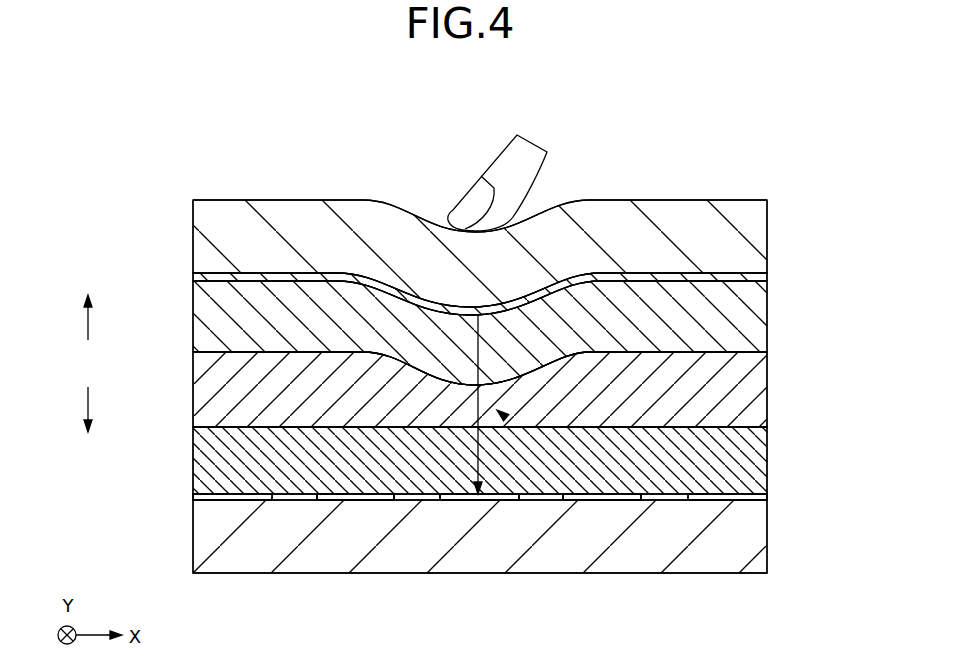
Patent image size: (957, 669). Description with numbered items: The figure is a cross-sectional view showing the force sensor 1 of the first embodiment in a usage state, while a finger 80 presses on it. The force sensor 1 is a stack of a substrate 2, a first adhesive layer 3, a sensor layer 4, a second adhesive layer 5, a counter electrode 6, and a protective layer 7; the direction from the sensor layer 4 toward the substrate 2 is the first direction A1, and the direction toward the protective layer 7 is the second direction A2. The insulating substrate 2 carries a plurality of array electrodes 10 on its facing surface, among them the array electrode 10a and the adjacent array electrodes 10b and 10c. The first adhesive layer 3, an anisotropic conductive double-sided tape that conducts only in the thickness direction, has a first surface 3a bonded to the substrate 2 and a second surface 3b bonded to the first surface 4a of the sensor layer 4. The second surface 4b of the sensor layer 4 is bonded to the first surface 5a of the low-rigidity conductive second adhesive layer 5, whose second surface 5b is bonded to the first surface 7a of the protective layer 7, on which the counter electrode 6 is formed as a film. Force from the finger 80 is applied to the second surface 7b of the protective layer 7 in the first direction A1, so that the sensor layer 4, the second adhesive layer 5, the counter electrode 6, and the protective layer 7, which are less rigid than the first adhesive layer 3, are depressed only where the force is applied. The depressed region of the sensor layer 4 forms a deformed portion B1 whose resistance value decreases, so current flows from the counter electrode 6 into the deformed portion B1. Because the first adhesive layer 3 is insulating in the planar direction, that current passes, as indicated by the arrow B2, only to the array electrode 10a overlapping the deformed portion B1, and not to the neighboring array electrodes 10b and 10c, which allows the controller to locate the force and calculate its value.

The force sensor 1 is at (782, 136).
The substrate 2 is at (757, 531).
The first adhesive layer 3 is at (767, 460).
The first surface 3a is at (281, 500).
The second surface 3b is at (218, 426).
The sensor layer 4 is at (767, 386).
The first surface 4a is at (767, 432).
The second surface 4b is at (752, 350).
The second adhesive layer 5 is at (752, 317).
The first surface 5a is at (200, 353).
The second surface 5b is at (200, 274).
The counter electrode 6 is at (752, 280).
The protective layer 7 is at (757, 236).
The first surface 7a is at (258, 284).
The second surface 7b is at (672, 200).
The array electrodes 10 is at (200, 497).
The array electrode 10a is at (453, 501).
The array electrode 10b is at (333, 501).
The array electrode 10c is at (633, 501).
The finger 80 is at (487, 163).
The deformed portion B1 is at (503, 416).
The arrow B2 is at (478, 338).
The first direction A1 is at (87, 426).
The second direction A2 is at (87, 304).